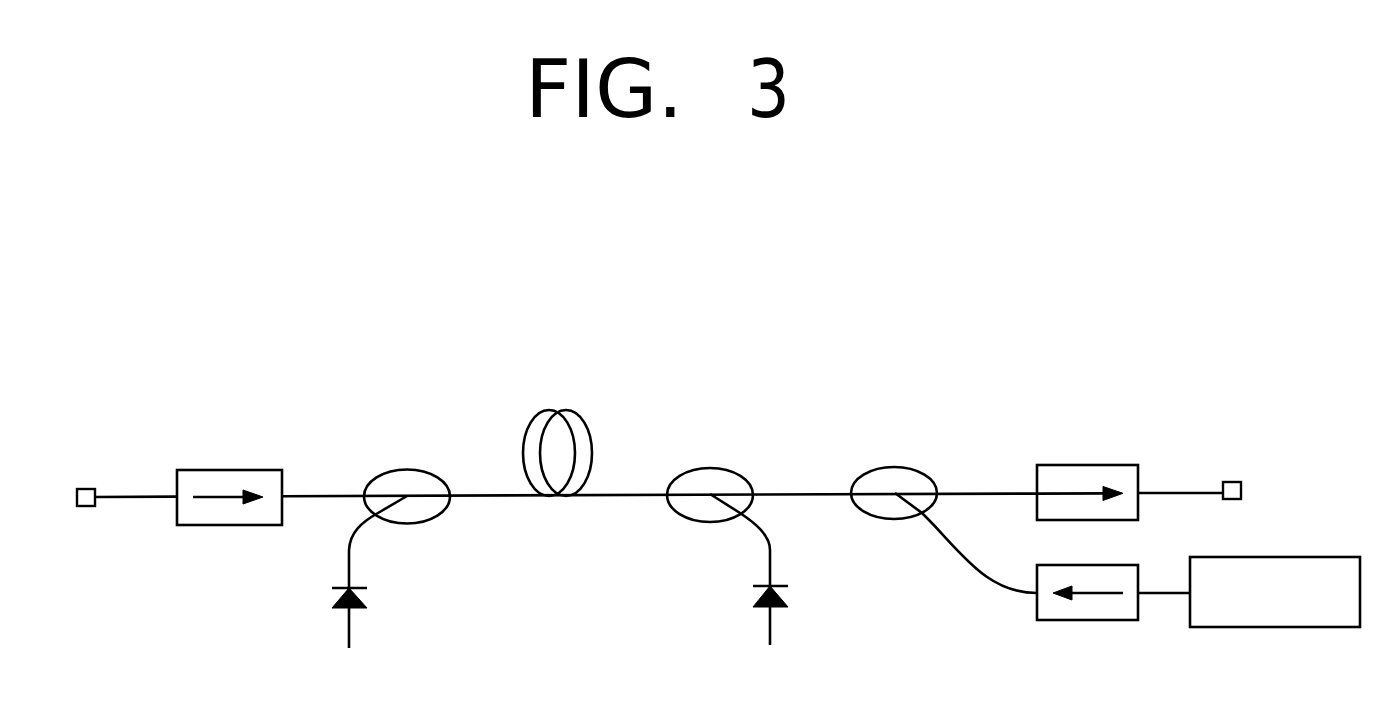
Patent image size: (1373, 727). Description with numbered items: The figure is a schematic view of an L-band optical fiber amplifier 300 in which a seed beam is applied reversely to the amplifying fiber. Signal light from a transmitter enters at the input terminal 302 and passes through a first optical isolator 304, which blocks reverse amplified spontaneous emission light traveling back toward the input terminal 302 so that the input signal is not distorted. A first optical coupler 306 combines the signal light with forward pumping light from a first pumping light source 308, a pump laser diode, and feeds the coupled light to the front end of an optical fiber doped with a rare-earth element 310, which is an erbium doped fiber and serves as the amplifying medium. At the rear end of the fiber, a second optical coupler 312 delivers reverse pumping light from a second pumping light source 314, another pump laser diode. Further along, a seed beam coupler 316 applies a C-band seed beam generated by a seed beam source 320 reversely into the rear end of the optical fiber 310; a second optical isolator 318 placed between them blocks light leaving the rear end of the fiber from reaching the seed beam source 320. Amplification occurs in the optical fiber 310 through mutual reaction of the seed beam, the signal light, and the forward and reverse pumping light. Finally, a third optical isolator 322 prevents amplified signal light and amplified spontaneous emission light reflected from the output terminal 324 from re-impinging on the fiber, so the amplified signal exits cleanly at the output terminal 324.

The L-band optical fiber amplifier 300 is at (588, 673).
The input terminal 302 is at (83, 508).
The first optical isolator 304 is at (233, 477).
The first optical coupler 306 is at (402, 478).
The first pumping light source 308 is at (321, 599).
The optical fiber doped with a rare-earth element 310 is at (550, 408).
The second optical coupler 312 is at (715, 477).
The second pumping light source 314 is at (799, 597).
The seed beam coupler 316 is at (908, 480).
The second optical isolator 318 is at (1093, 613).
The seed beam source 320 is at (1273, 628).
The third optical isolator 322 is at (1095, 472).
The output terminal 324 is at (1235, 480).